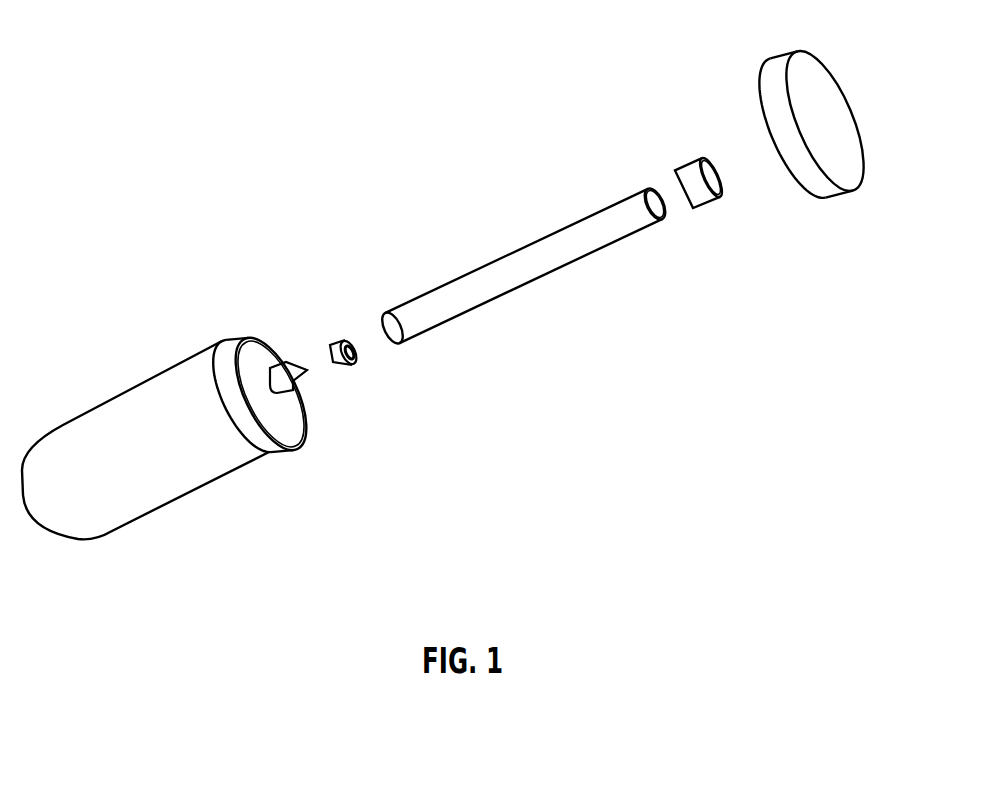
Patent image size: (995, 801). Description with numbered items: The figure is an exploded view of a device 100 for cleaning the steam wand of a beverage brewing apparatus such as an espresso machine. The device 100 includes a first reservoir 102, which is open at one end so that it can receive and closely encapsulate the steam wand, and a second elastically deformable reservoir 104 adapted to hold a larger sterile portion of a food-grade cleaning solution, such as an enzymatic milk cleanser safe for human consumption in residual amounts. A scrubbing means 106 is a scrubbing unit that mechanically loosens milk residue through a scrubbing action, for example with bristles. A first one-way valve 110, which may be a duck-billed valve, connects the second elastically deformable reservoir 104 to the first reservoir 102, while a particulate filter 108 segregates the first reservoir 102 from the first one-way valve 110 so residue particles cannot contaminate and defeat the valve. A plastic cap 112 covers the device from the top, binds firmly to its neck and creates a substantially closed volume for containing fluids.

The device 100 is at (204, 55).
The first reservoir 102 is at (508, 293).
The second elastically deformable reservoir 104 is at (200, 492).
The scrubbing means 106 is at (707, 202).
The particulate filter 108 is at (346, 365).
The first one-way valve 110 is at (281, 360).
The plastic cap 112 is at (833, 201).